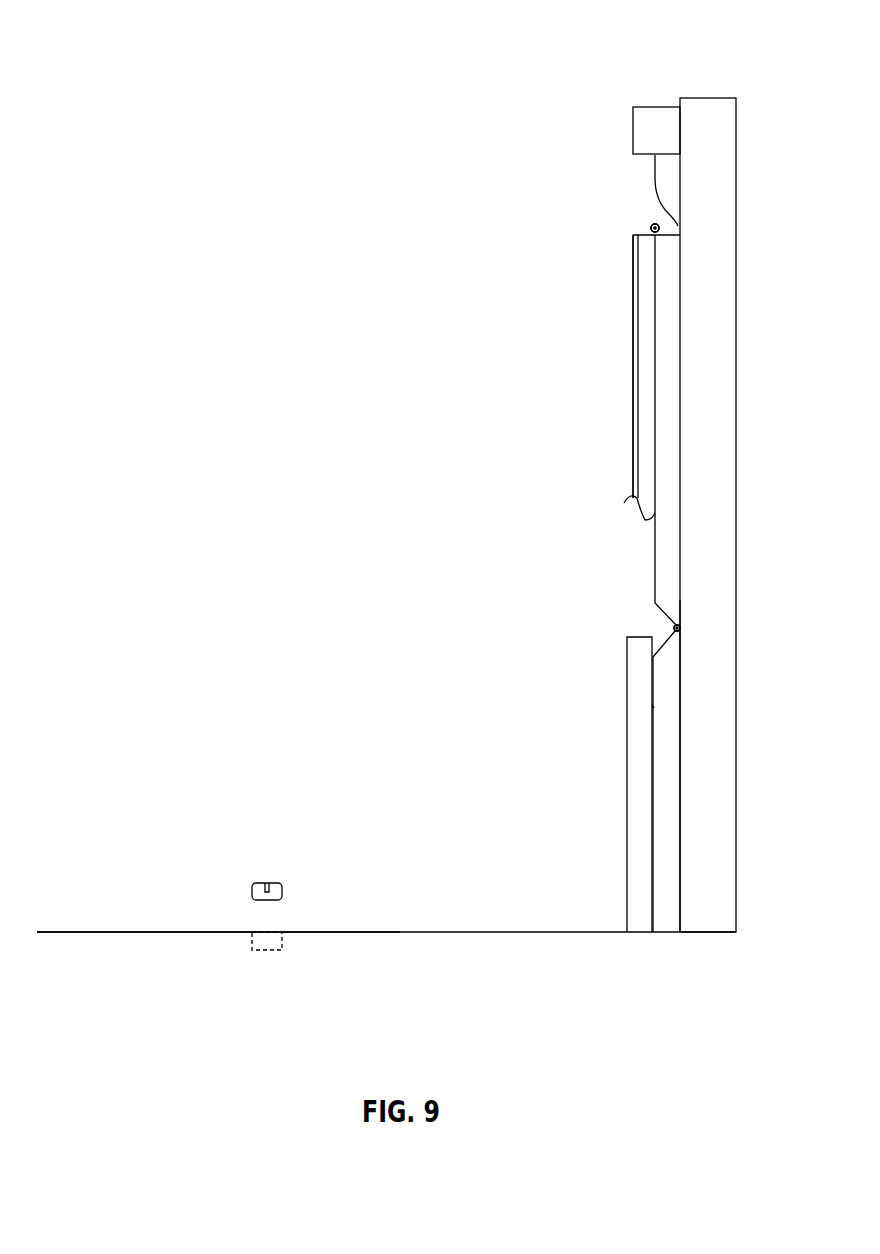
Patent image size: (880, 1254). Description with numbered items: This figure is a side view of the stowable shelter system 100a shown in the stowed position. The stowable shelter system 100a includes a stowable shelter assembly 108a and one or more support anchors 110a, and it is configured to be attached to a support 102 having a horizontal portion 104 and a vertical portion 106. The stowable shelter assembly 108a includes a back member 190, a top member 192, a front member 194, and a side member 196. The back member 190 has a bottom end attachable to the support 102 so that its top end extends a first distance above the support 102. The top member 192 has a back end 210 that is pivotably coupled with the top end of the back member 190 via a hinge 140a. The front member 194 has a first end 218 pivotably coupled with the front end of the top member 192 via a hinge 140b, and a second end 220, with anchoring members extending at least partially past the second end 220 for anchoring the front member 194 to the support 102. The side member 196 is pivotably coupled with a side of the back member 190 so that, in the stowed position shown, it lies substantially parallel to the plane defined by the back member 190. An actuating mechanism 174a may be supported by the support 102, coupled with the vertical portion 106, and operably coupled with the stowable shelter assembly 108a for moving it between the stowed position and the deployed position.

The stowable shelter system 100a is at (185, 96).
The support 102 is at (90, 933).
The horizontal portion 104 is at (113, 931).
The vertical portion 106 is at (736, 402).
The stowable shelter assembly 108a is at (632, 391).
The support anchor 110a is at (262, 953).
The hinge 140a is at (673, 627).
The hinge 140b is at (652, 224).
The actuating mechanism 174a is at (633, 130).
The back member 190 is at (680, 783).
The top member 192 is at (655, 440).
The front member 194 is at (633, 330).
The side member 196 is at (627, 737).
The back end 210 is at (657, 232).
The first end 218 is at (633, 233).
The second end 220 is at (624, 503).